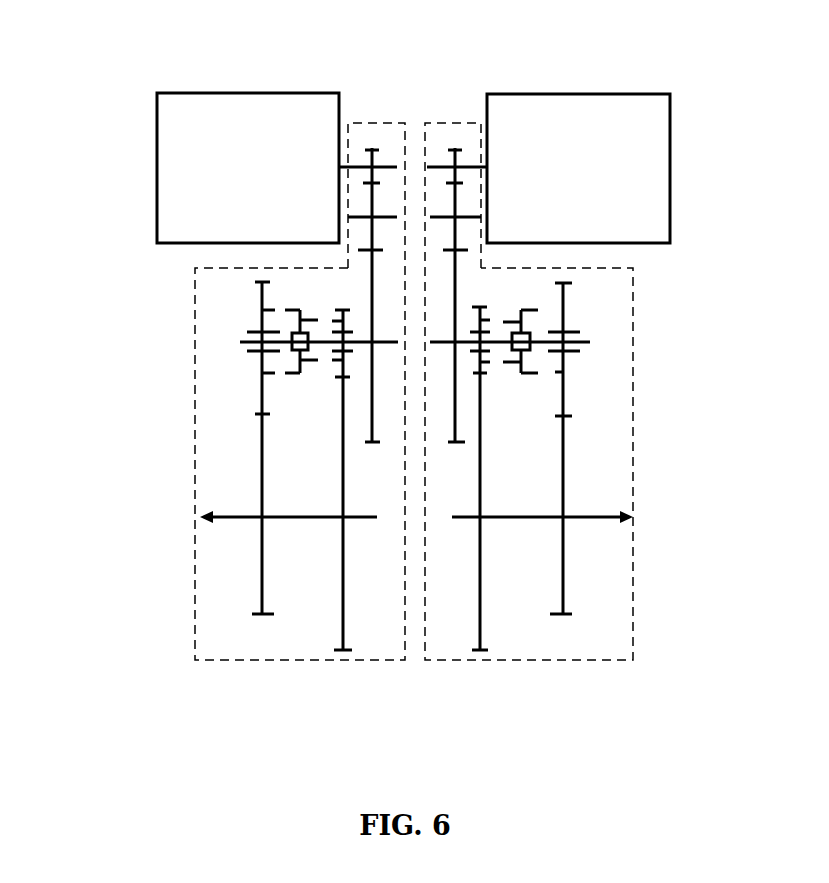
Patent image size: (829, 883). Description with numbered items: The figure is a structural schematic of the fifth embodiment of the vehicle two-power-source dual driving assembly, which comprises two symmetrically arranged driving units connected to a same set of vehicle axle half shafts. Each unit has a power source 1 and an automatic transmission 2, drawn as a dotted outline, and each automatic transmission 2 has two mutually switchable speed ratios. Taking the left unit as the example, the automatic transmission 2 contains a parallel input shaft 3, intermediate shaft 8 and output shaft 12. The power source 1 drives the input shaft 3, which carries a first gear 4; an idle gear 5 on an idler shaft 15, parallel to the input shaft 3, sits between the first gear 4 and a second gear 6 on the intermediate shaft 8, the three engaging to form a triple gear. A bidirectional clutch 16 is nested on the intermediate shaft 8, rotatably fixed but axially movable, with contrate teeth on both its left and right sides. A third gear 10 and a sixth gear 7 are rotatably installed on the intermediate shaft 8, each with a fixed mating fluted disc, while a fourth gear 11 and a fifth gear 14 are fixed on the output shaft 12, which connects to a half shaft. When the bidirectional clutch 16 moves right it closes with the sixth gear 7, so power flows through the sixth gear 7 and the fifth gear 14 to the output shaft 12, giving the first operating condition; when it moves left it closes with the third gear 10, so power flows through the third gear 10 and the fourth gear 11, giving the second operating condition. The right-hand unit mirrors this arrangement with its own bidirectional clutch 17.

The power source 1 is at (248, 155).
The automatic transmission 2 is at (193, 507).
The input shaft 3 is at (347, 165).
The first gear 4 is at (375, 148).
The idle gear 5 is at (373, 203).
The idler shaft 15 is at (385, 213).
The second gear 6 is at (370, 273).
The sixth gear 7 is at (340, 307).
The bidirectional clutch 16 is at (300, 328).
The intermediate shaft 8 is at (253, 338).
The third gear 10 is at (260, 412).
The fourth gear 11 is at (260, 473).
The output shaft 12 is at (275, 520).
The fifth gear 14 is at (343, 612).
The bidirectional clutch 17 is at (523, 322).